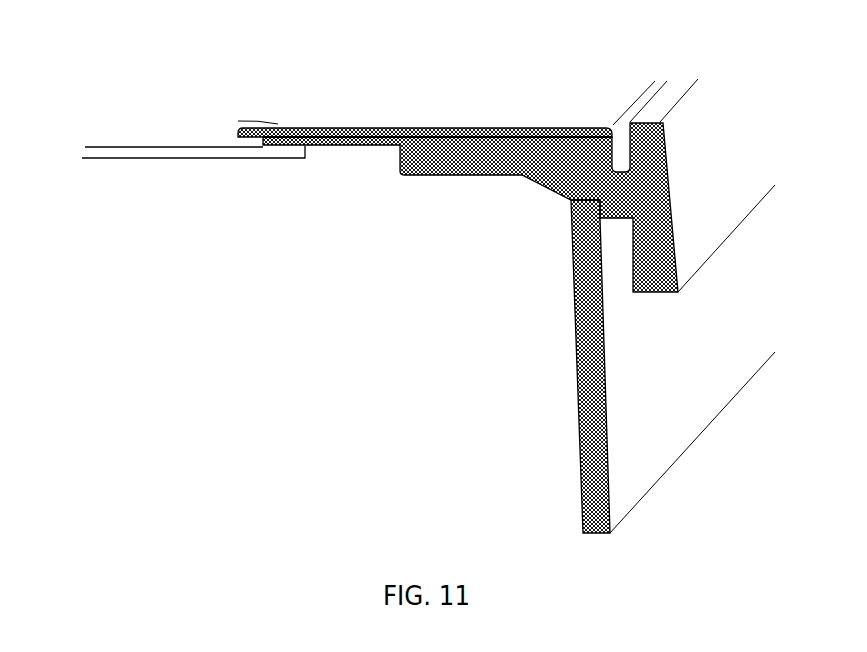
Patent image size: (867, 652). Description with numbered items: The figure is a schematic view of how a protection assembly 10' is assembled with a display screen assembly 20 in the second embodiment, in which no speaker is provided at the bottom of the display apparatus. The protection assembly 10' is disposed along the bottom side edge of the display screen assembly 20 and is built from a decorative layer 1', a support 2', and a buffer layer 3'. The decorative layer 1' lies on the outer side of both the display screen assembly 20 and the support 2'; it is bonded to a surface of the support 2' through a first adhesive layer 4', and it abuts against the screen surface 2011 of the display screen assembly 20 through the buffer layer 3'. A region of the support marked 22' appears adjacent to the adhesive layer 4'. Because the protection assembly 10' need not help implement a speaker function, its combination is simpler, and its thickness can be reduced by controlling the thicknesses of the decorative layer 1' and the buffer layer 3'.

The decorative layer 1' is at (412, 96).
The support 2' is at (615, 366).
The buffer layer 3' is at (245, 106).
The first adhesive layer 4' is at (425, 104).
The protection assembly 10' is at (470, 302).
The display screen assembly 20 is at (189, 148).
The supporting flange 22' is at (437, 104).
The screen surface 2011 is at (130, 146).